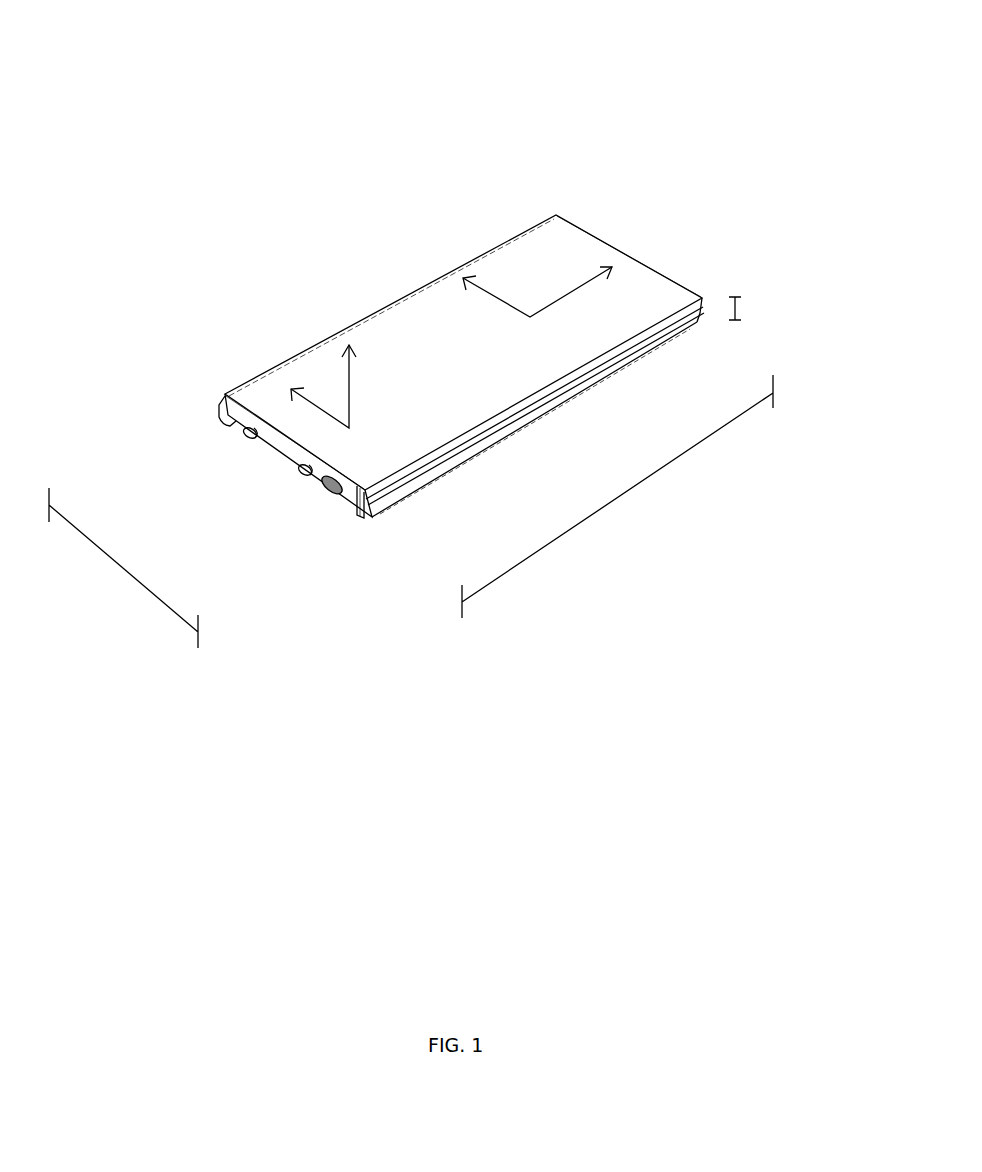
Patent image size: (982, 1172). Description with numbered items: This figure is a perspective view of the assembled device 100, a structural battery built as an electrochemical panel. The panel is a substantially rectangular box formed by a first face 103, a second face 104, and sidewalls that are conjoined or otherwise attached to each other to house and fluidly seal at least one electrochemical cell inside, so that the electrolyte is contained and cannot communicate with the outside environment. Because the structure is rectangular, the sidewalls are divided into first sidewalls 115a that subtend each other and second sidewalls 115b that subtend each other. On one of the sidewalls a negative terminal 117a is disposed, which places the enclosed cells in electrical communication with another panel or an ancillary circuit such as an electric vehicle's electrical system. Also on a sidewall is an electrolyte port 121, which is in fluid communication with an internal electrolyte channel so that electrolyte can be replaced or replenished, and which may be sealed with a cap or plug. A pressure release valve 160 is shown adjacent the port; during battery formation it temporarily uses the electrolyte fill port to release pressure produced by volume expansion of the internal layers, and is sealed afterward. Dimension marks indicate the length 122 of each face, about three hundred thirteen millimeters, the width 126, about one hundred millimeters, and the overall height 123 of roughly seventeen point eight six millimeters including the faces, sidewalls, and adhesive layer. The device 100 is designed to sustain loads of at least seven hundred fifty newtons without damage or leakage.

The device 100 is at (390, 108).
The first face 103 is at (387, 345).
The second face 104 is at (339, 503).
The first sidewall 115a is at (653, 268).
The second sidewall 115b is at (542, 410).
The negative terminal 117a is at (245, 431).
The electrolyte port 121 is at (298, 474).
The length 122 is at (617, 496).
The height 123 is at (742, 305).
The width 126 is at (123, 568).
The pressure release valve 160 is at (337, 492).